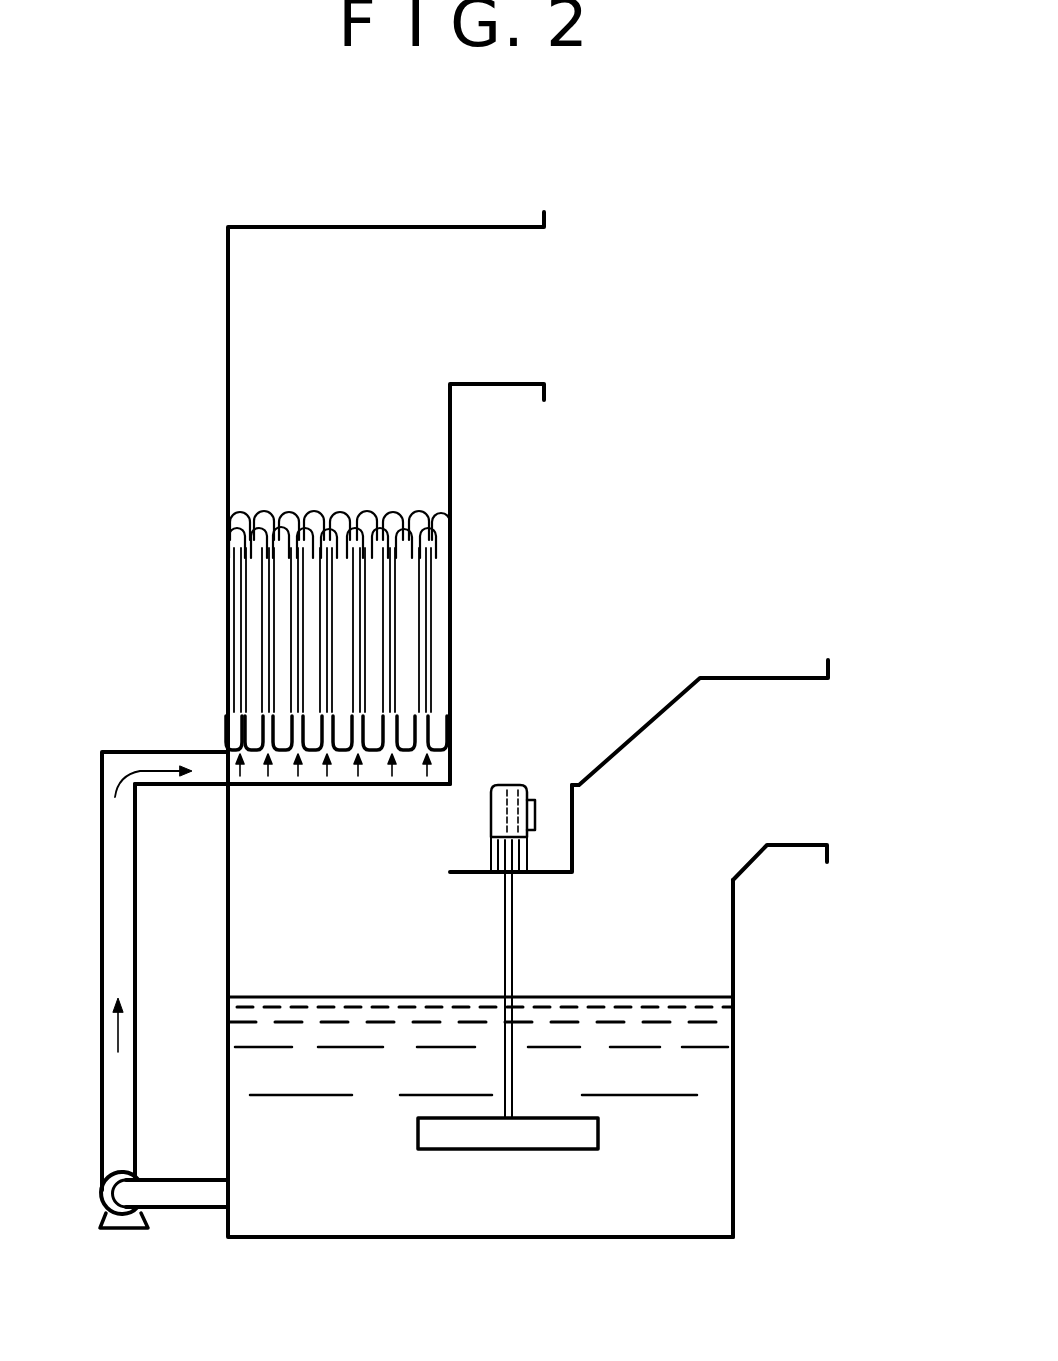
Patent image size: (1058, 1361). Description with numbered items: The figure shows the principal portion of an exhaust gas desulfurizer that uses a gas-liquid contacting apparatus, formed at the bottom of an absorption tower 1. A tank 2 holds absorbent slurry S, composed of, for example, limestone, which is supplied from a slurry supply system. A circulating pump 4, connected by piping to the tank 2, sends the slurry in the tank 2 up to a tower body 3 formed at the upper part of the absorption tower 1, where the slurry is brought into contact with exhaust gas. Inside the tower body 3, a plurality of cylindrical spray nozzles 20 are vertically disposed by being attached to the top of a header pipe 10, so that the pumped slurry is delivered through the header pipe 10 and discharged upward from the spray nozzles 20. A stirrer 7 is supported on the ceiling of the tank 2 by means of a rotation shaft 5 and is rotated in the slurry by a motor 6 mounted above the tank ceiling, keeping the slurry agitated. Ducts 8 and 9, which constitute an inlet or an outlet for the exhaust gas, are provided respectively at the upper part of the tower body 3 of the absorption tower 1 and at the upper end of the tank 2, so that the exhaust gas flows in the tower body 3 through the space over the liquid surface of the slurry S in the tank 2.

The absorption tower 1 is at (228, 876).
The tank 2 is at (735, 1145).
The tower body 3 is at (453, 489).
The circulating pump 4 is at (104, 1200).
The rotation shaft 5 is at (503, 940).
The motor 6 is at (529, 797).
The stirrer 7 is at (545, 1152).
The duct 8 is at (518, 306).
The duct 9 is at (800, 772).
The header pipe 10 is at (316, 788).
The spray nozzles 20 is at (441, 748).
The absorbent slurry S is at (593, 983).